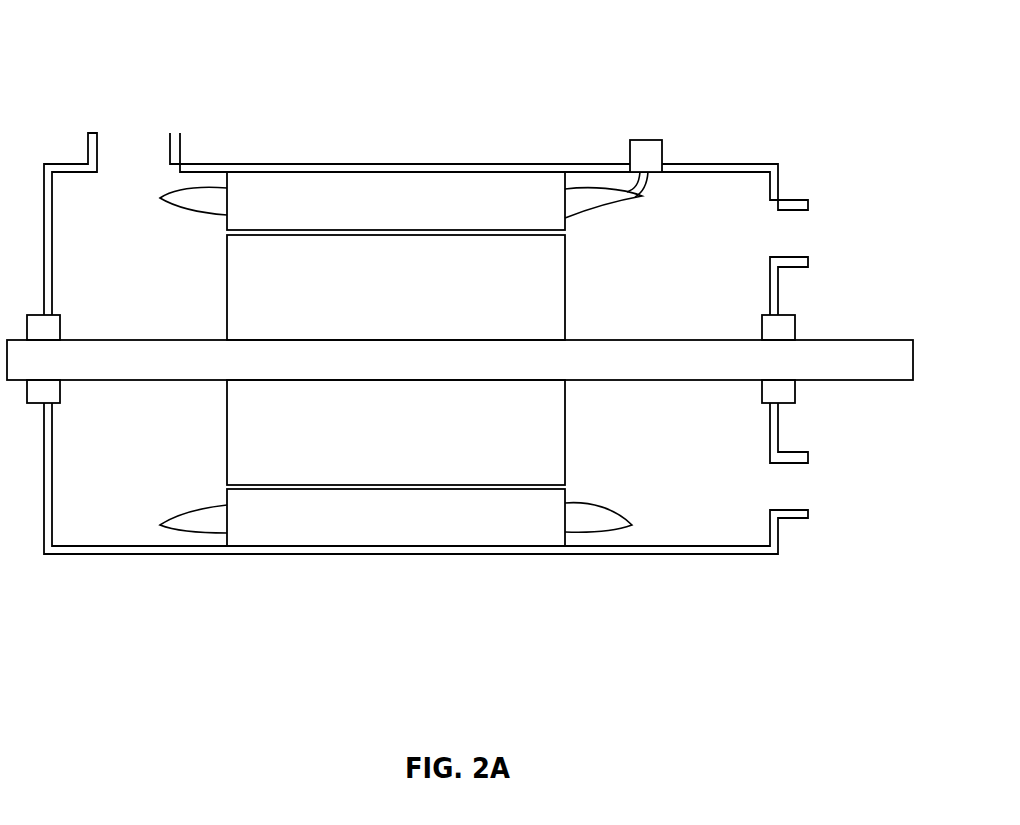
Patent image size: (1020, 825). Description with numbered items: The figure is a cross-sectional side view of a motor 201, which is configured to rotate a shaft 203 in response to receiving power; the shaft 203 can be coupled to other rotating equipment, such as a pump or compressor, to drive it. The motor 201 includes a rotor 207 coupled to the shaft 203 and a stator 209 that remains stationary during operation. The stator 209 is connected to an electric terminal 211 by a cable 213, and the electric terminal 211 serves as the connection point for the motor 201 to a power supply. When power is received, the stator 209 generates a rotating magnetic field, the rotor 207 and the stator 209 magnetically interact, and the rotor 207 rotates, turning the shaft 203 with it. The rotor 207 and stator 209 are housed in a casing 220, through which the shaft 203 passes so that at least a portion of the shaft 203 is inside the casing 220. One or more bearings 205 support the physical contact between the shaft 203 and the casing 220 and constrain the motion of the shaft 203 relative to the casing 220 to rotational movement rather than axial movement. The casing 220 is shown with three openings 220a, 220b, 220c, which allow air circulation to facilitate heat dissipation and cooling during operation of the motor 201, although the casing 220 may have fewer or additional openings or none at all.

The motor 201 is at (399, 99).
The shaft 203 is at (877, 382).
The bearings 205 is at (795, 331).
The rotor 207 is at (565, 300).
The stator 209 is at (540, 186).
The electric terminal 211 is at (646, 140).
The cable 213 is at (650, 192).
The casing 220 is at (486, 305).
The opening 220a is at (137, 133).
The opening 220b is at (807, 232).
The opening 220c is at (807, 487).